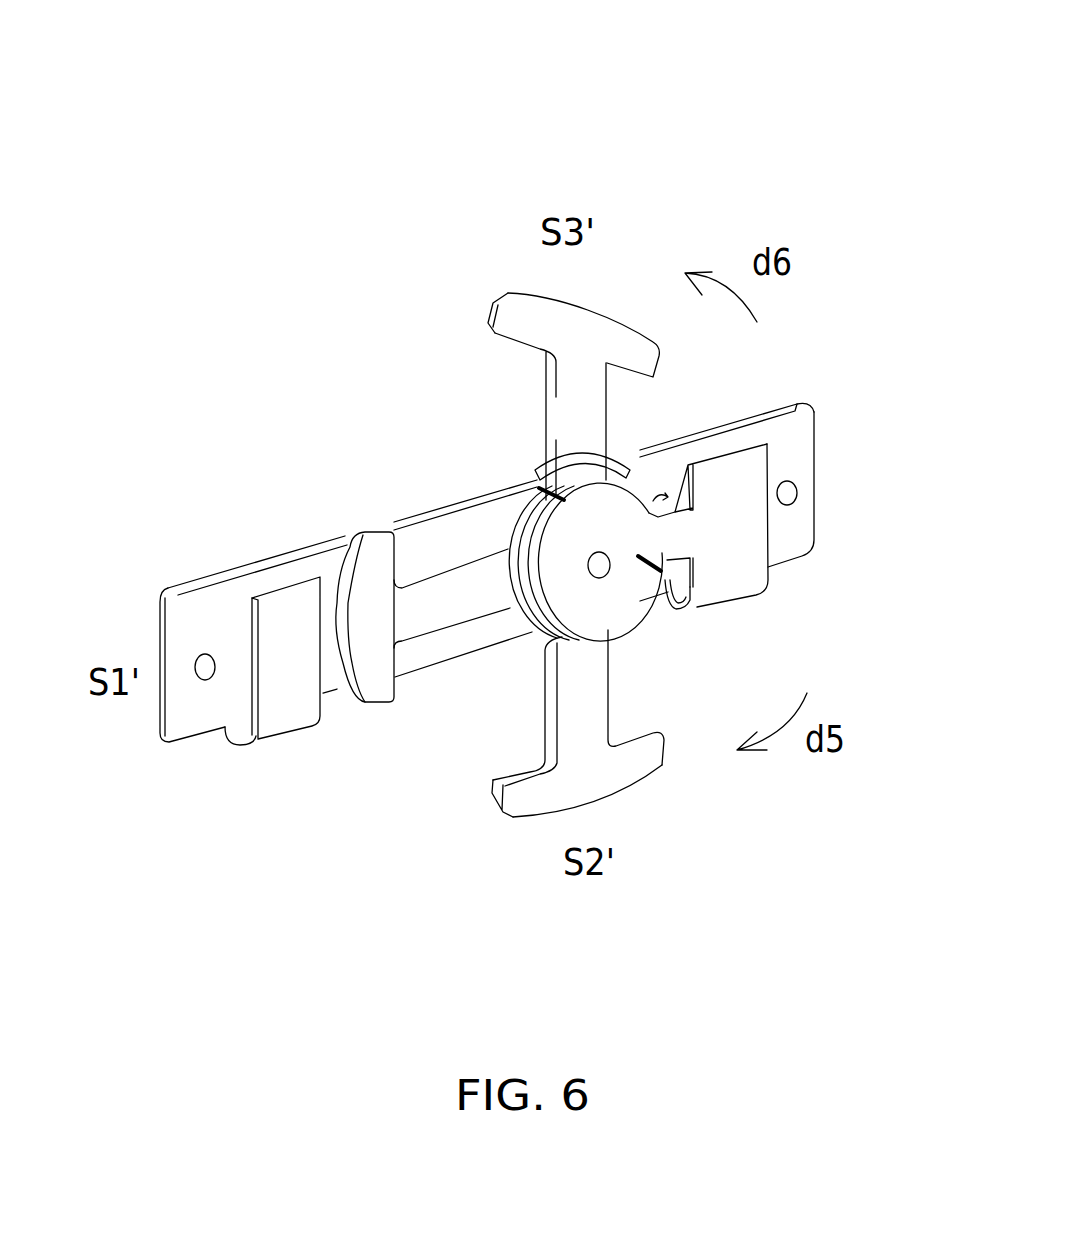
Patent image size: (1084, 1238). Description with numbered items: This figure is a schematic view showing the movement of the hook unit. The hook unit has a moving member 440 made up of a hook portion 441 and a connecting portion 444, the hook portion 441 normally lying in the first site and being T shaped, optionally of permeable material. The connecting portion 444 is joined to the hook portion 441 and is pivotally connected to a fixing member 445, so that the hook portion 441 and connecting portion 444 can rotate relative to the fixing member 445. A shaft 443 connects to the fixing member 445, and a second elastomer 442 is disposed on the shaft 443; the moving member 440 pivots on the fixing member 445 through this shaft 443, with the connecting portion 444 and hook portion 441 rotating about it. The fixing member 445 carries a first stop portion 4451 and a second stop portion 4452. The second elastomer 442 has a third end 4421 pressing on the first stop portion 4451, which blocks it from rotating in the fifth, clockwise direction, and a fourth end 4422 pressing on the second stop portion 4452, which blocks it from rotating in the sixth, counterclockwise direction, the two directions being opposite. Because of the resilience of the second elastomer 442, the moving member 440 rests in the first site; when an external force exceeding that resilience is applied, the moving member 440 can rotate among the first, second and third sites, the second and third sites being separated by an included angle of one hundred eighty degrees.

The moving member 440 is at (829, 1).
The hook portion 441 is at (377, 562).
The second elastomer 442 is at (829, 896).
The shaft 443 is at (588, 565).
The connecting portion 444 is at (420, 742).
The fixing member 445 is at (217, 617).
The third end 4421 is at (505, 455).
The fourth end 4422 is at (660, 576).
The first stop portion 4451 is at (690, 466).
The second stop portion 4452 is at (658, 582).